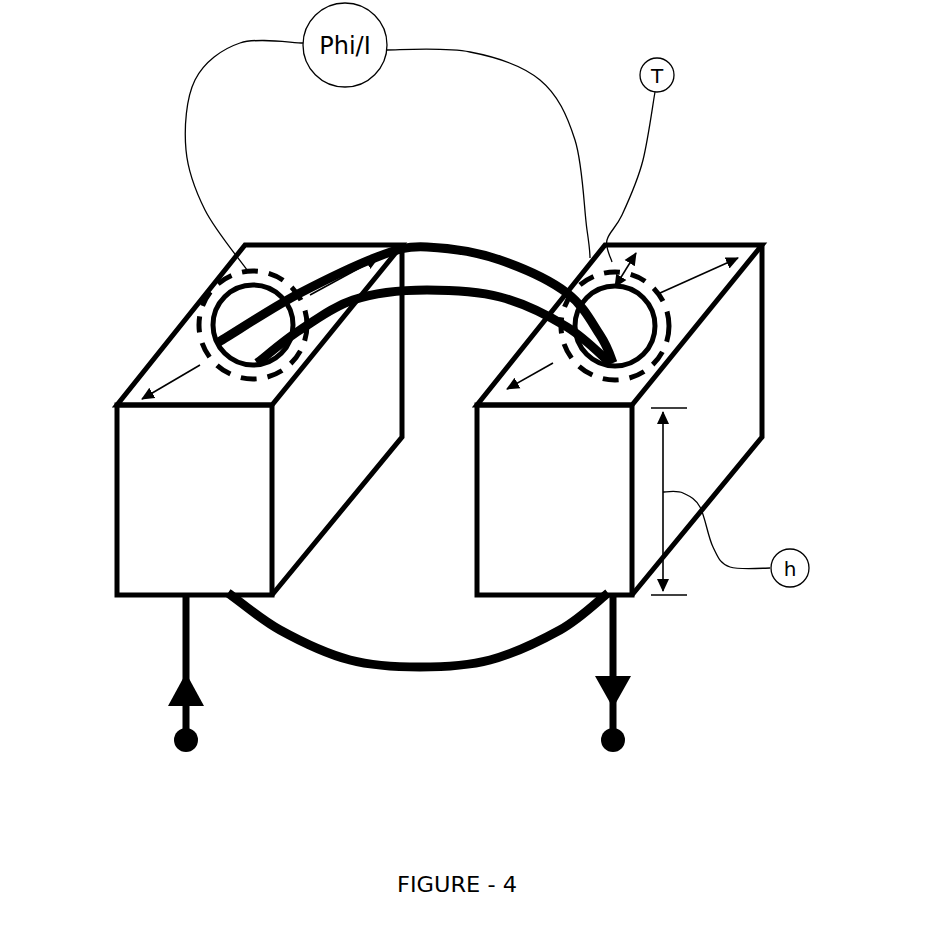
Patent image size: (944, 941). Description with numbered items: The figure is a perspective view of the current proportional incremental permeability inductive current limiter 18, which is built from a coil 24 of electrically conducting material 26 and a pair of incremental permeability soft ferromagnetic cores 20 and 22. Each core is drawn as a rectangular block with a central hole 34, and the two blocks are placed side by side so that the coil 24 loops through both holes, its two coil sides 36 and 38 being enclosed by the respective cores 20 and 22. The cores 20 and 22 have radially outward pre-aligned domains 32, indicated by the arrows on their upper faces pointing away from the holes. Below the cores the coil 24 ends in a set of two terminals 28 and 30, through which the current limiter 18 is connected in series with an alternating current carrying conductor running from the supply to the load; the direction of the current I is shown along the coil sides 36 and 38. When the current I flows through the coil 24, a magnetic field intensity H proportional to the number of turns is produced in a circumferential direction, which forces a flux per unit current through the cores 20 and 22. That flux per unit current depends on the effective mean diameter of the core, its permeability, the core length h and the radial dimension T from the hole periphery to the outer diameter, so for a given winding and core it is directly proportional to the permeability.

The current proportional incremental permeability inductive current limiter 18 is at (439, 339).
The incremental permeability soft ferromagnetic core 20 is at (333, 453).
The incremental permeability soft ferromagnetic core 22 is at (503, 505).
The coil 24 is at (453, 290).
The electrically conducting material 26 is at (425, 675).
The terminal 28 is at (173, 743).
The terminal 30 is at (622, 750).
The radially outward pre-aligned domains 32 is at (180, 377).
The central hole 34 is at (230, 290).
The coil side 36 is at (180, 642).
The coil side 38 is at (620, 632).